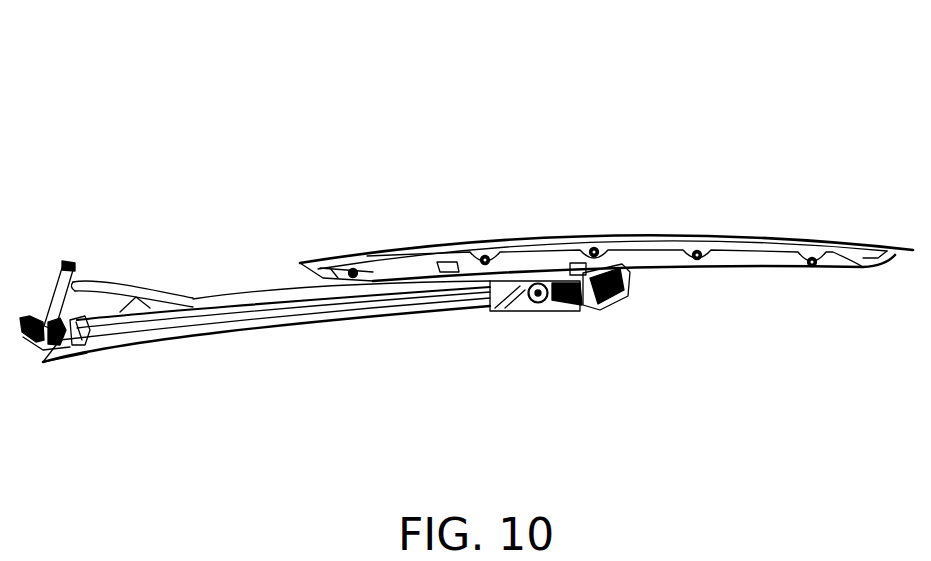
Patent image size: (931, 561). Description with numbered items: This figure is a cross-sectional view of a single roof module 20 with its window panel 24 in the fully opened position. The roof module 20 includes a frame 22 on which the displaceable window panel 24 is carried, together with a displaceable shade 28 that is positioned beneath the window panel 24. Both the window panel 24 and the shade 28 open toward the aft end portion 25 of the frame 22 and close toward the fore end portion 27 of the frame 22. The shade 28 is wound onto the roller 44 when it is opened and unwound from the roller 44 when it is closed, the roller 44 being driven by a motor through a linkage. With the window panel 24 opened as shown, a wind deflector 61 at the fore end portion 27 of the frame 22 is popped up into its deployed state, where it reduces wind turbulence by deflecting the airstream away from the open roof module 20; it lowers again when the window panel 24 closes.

The roof module 20 is at (612, 122).
The frame 22 is at (220, 328).
The window panel 24 is at (590, 229).
The aft end portion 25 is at (597, 306).
The fore end portion 27 is at (43, 360).
The shade 28 is at (525, 302).
The roller 44 is at (543, 302).
The wind deflector 61 is at (57, 288).